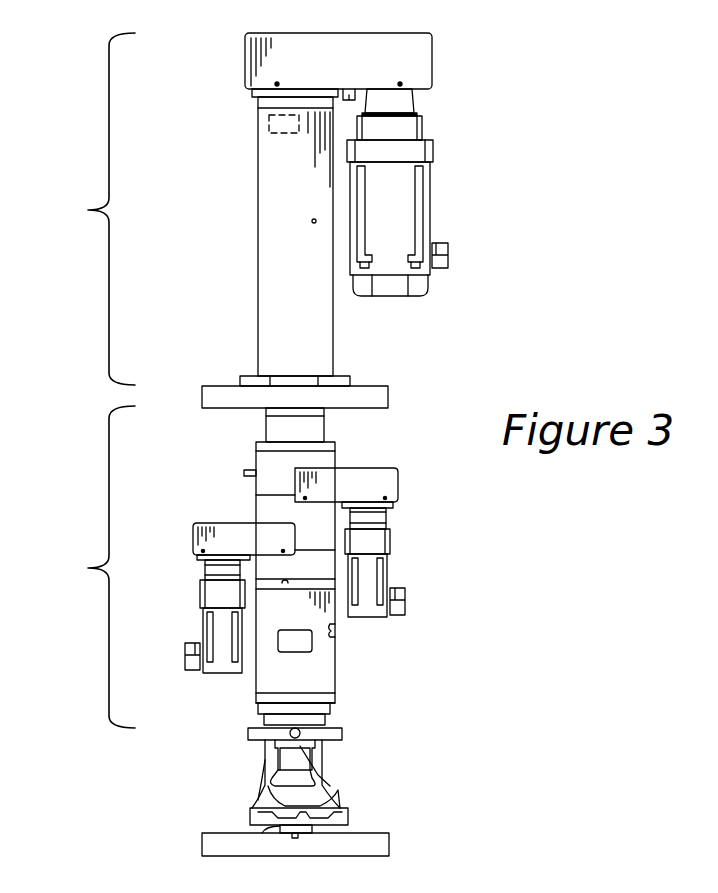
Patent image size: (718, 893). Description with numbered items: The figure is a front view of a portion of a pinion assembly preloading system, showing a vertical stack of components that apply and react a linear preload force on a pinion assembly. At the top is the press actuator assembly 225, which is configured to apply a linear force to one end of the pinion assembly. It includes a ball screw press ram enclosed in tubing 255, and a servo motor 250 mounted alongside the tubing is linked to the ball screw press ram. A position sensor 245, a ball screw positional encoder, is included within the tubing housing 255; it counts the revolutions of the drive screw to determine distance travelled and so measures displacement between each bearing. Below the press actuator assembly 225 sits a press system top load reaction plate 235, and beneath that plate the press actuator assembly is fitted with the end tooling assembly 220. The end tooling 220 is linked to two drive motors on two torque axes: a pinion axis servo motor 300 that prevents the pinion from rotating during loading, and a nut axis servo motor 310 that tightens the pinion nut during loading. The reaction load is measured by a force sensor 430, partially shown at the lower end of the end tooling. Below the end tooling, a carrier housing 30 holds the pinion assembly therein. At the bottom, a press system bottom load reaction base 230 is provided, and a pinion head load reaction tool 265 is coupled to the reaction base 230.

The press actuator assembly 225 is at (267, 209).
The end tooling assembly 220 is at (248, 567).
The position sensor 245 is at (266, 130).
The servo motor 250 is at (420, 193).
The tubing 255 is at (265, 279).
The press system top load reaction plate 235 is at (389, 408).
The pinion axis servo motor 300 is at (374, 569).
The nut axis servo motor 310 is at (207, 623).
The force sensor 430 is at (334, 711).
The carrier housing 30 is at (332, 766).
The pinion head load reaction tool 265 is at (282, 829).
The press system bottom load reaction base 230 is at (387, 847).